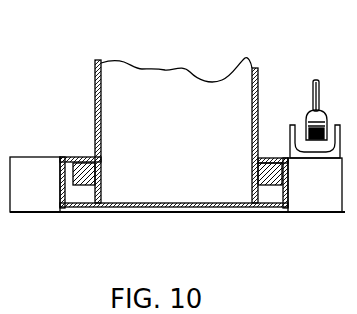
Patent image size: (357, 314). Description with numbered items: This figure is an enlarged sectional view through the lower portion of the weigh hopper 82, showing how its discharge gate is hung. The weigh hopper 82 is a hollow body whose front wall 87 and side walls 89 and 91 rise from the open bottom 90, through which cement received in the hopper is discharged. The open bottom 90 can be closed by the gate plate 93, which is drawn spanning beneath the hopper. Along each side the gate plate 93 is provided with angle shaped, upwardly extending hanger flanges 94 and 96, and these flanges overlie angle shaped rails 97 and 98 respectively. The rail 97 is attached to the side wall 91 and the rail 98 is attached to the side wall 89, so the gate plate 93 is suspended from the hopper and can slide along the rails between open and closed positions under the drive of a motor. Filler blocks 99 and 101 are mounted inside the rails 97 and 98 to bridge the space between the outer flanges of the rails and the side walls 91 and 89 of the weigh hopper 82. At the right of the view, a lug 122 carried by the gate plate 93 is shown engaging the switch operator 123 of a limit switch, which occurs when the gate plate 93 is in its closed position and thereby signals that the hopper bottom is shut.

The weigh hopper 82 is at (148, 69).
The front wall 87 is at (116, 84).
The side wall 89 is at (162, 139).
The open bottom 90 is at (112, 213).
The side wall 91 is at (95, 90).
The gate plate 93 is at (161, 207).
The hanger flange 94 is at (63, 157).
The hanger flange 96 is at (252, 125).
The rail 97 is at (101, 160).
The rail 98 is at (253, 172).
The filler block 99 is at (78, 185).
The filler block 101 is at (278, 188).
The lug 122 is at (342, 125).
The switch operator 123 is at (310, 120).